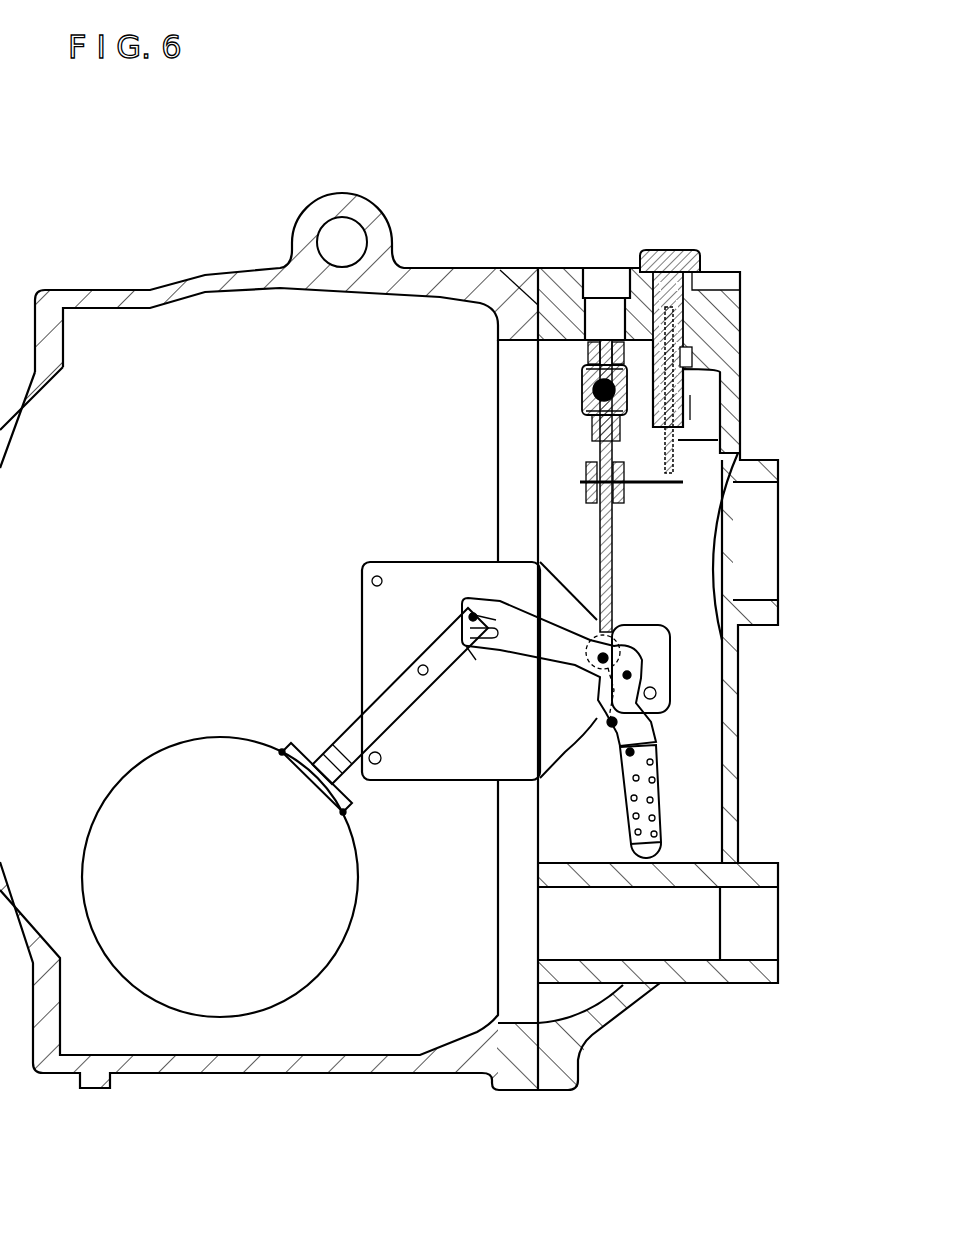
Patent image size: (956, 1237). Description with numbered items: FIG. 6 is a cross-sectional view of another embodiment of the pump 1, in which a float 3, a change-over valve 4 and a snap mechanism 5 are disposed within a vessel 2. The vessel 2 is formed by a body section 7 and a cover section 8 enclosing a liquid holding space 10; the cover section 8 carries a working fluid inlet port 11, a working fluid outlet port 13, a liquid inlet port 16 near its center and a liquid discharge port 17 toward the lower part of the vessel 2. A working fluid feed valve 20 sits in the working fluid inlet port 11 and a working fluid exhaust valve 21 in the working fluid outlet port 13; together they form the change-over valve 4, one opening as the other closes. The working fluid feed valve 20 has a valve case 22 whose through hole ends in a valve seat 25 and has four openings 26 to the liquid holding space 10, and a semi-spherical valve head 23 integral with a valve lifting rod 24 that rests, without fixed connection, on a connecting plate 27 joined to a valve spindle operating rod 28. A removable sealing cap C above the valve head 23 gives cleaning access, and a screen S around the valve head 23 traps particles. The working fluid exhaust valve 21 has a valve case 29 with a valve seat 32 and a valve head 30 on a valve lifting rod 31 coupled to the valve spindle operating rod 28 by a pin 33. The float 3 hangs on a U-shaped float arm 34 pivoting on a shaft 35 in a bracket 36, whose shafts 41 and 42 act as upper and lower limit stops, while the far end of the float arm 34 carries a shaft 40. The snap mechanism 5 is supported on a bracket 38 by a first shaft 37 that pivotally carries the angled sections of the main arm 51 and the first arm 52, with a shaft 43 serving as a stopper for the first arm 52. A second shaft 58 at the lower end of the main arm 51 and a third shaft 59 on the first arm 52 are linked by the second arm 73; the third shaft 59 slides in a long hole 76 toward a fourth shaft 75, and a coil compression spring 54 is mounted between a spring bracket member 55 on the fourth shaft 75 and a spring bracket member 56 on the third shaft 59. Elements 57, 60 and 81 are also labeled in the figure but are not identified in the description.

The pump 1 is at (462, 226).
The vessel 2 is at (221, 245).
The float 3 is at (128, 770).
The change-over valve 4 is at (692, 470).
The snap mechanism 5 is at (650, 638).
The body section 7 is at (117, 298).
The cover section 8 is at (732, 283).
The liquid holding space 10 is at (148, 407).
The working fluid inlet port 11 is at (727, 300).
The working fluid outlet port 13 is at (606, 285).
The liquid inlet port 16 is at (760, 548).
The liquid discharge port 17 is at (757, 926).
The working fluid feed valve 20 is at (690, 407).
The working fluid exhaust valve 21 is at (560, 393).
The valve case 22 is at (686, 350).
The valve head 23 is at (665, 302).
The valve lifting rod 24 is at (673, 436).
The valve seat 25 is at (684, 313).
The openings 26 is at (686, 382).
The connecting plate 27 is at (578, 483).
The valve spindle operating rod 28 is at (607, 538).
The valve case 29 is at (598, 405).
The valve head 30 is at (598, 376).
The valve lifting rod 31 is at (598, 430).
The valve seat 32 is at (590, 350).
The pin 33 is at (596, 462).
The float arm 34 is at (397, 690).
The shaft 35 is at (418, 668).
The bracket 36 is at (382, 618).
The first shaft 37 is at (657, 693).
The bracket 38 is at (658, 657).
The shaft 40 is at (468, 612).
The shaft 41 is at (372, 581).
The shaft 42 is at (379, 764).
The shaft 43 is at (656, 708).
The main arm 51 is at (483, 650).
The first arm 52 is at (650, 735).
The coil compression spring 54 is at (630, 802).
The spring bracket member 55 is at (632, 835).
The spring bracket member 56 is at (621, 755).
The tappet 57 is at (492, 625).
The second shaft 58 is at (604, 720).
The third shaft 59 is at (657, 765).
The contact point 60 is at (615, 625).
The second arm 73 is at (575, 745).
The fourth shaft 75 is at (661, 833).
The long hole 76 is at (657, 792).
The rocker arm head 81 is at (620, 637).
The sealing cap C is at (649, 250).
The screen S is at (684, 250).